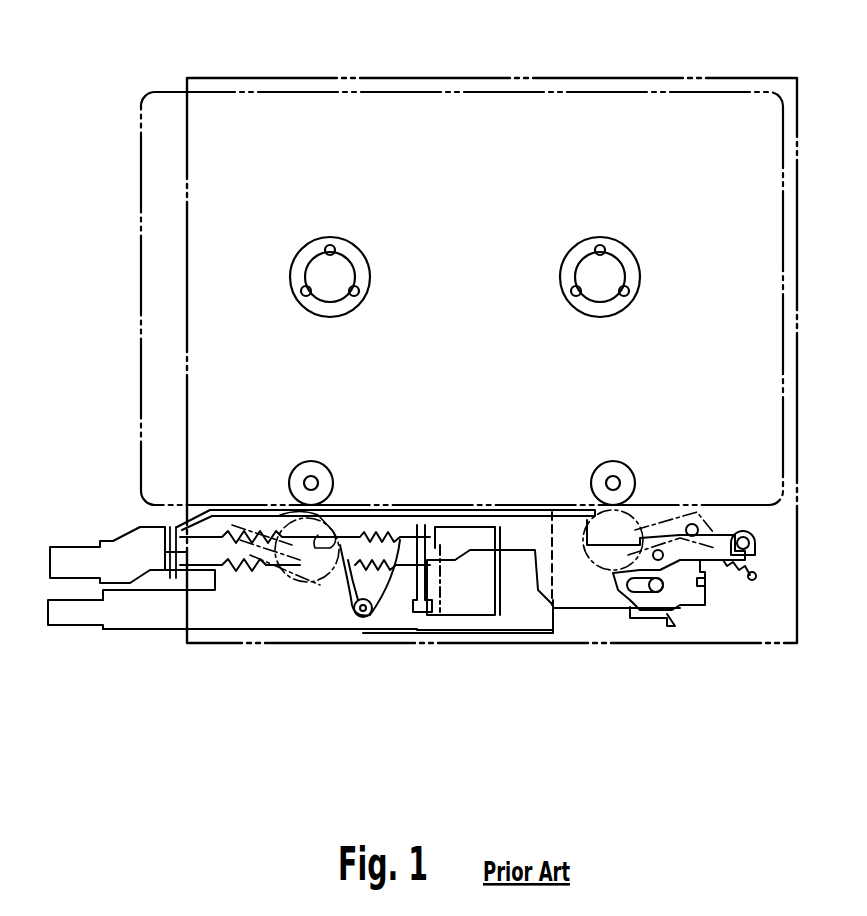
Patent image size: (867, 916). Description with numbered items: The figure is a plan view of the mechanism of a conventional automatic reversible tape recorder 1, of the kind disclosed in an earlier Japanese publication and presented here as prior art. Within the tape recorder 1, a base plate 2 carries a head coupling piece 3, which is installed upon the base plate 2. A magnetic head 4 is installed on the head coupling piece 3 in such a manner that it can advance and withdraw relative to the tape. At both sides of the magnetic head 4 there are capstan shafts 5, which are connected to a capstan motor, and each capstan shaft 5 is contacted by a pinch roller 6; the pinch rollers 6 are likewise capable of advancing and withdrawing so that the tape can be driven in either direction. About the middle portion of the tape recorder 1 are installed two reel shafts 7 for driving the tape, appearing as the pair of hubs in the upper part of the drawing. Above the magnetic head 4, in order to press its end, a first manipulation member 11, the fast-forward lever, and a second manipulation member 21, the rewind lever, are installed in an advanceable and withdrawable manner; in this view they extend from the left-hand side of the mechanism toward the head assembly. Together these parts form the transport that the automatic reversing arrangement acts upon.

The tape recorder 1 is at (140, 148).
The base plate 2 is at (648, 78).
The head coupling piece 3 is at (543, 620).
The magnetic head 4 is at (475, 605).
The capstan shafts 5 is at (302, 462).
The pinch rollers 6 is at (290, 515).
The reel shafts 7 is at (301, 262).
The first manipulation member (FF lever) 11 is at (90, 618).
The second manipulation member (REW lever) 21 is at (68, 550).